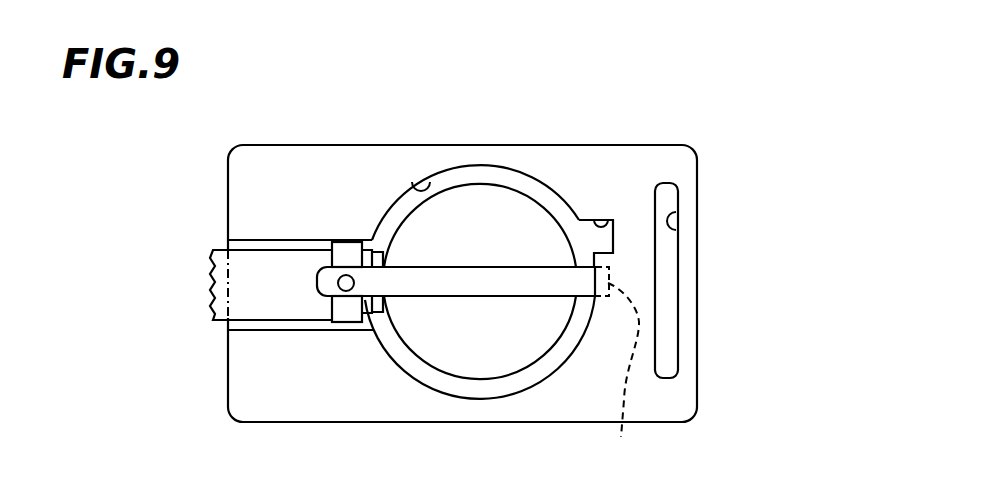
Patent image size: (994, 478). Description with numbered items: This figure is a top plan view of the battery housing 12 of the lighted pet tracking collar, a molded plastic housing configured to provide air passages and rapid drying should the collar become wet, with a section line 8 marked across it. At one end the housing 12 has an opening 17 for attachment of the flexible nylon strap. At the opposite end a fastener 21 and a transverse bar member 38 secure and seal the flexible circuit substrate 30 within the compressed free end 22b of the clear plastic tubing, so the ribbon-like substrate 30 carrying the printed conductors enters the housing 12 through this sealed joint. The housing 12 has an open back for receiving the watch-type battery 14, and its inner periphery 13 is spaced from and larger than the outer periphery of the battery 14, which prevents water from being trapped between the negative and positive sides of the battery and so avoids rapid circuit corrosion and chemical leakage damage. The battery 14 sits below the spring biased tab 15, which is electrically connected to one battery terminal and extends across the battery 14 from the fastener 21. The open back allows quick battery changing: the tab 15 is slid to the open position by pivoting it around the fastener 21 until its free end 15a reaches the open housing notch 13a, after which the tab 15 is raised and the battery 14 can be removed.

The section line 8- 8 is at (188, 283).
The battery housing 12 is at (318, 162).
The inner periphery 13 is at (432, 180).
The open housing notch 13a is at (610, 216).
The battery 14 is at (502, 208).
The spring biased tab 15 is at (437, 288).
The free end 15a is at (623, 370).
The opening 17 is at (677, 229).
The fastener 21 is at (338, 286).
The compressed free end of tubing 22b is at (268, 256).
The circuit substrate 30 is at (381, 310).
The transverse bar member 38 is at (347, 241).